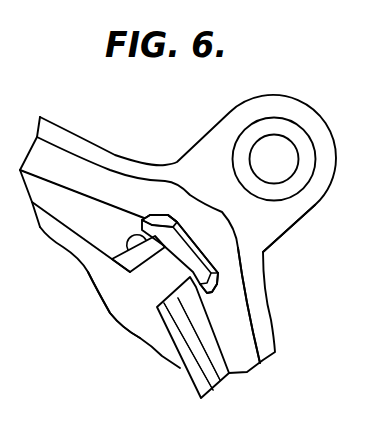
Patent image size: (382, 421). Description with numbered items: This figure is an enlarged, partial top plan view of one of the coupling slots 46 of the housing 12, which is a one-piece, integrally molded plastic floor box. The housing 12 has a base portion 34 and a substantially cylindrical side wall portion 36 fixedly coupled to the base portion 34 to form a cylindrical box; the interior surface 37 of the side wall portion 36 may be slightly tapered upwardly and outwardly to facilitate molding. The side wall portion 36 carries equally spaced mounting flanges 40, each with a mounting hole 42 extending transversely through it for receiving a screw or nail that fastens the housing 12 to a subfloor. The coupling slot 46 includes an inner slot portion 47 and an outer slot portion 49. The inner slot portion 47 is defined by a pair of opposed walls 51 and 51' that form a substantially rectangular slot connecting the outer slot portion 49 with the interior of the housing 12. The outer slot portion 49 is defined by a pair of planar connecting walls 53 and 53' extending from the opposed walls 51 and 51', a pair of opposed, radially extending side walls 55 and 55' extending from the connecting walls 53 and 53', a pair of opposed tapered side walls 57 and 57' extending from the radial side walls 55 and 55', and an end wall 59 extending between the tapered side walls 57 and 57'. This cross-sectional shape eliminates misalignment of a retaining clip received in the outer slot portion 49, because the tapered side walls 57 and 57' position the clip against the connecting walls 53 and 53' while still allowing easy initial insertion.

The housing 12 is at (79, 125).
The mounting flange 40 is at (210, 133).
The mounting hole 42 is at (260, 164).
The side wall portion 36 is at (261, 320).
The interior surface 37 is at (59, 217).
The base portion 34 is at (73, 259).
The coupling slot 46 is at (120, 292).
The connecting wall 53 is at (82, 219).
The opposed wall 51 is at (131, 261).
The outer slot portion 49 is at (191, 256).
The radially extending side wall 55 is at (126, 198).
The tapered side wall 57 is at (153, 175).
The end wall 59 is at (191, 240).
The tapered side wall 57' is at (258, 266).
The radially extending side wall 55' is at (221, 307).
The inner slot portion 47 is at (160, 288).
The opposed wall 51' is at (184, 345).
The connecting wall 53' is at (209, 335).